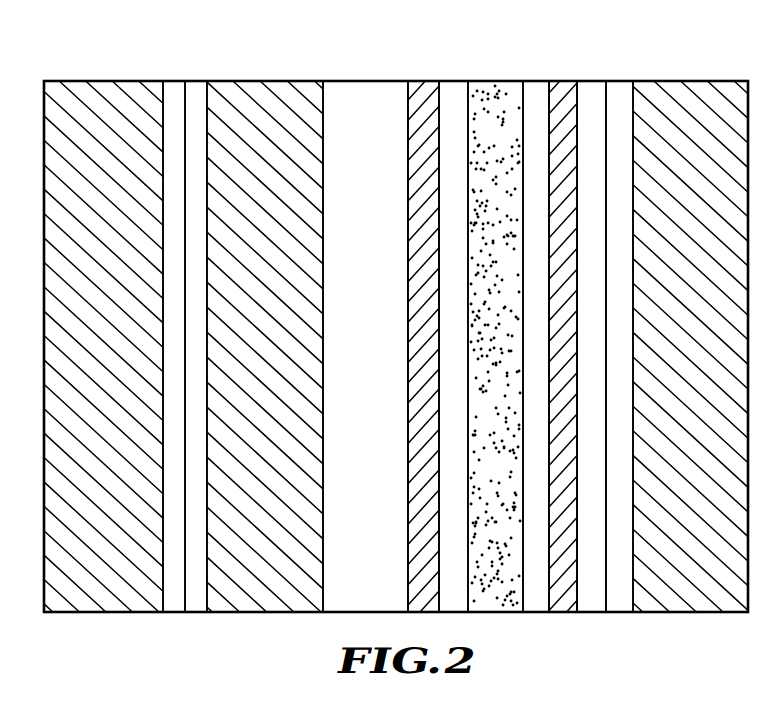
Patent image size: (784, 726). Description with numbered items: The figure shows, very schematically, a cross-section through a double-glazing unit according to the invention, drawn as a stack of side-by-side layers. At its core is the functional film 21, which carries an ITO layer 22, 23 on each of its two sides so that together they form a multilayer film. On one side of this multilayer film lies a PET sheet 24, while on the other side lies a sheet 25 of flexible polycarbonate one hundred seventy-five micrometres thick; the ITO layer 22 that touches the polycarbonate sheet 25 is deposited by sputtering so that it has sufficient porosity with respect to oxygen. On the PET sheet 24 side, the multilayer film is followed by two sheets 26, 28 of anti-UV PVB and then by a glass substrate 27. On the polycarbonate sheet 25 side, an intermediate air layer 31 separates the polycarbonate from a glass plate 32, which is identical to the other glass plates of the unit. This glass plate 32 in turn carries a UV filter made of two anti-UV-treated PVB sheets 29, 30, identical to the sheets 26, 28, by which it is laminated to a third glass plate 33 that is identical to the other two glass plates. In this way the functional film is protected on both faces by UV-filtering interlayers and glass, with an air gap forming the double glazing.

The functional film 21 is at (500, 86).
The ITO layer 22 is at (452, 86).
The ITO layer 23 is at (537, 86).
The PET sheet 24 is at (568, 86).
The sheet of flexible polycarbonate 25 is at (423, 86).
The sheet of anti-UV PVB 26 is at (620, 86).
The glass substrate 27 is at (688, 86).
The sheet of anti-UV PVB 28 is at (595, 608).
The anti-UV-treated PVB sheet 29 is at (172, 612).
The anti-UV-treated PVB sheet 30 is at (197, 608).
The intermediate air layer 31 is at (366, 88).
The glass plate 32 is at (252, 88).
The third glass plate 33 is at (103, 88).